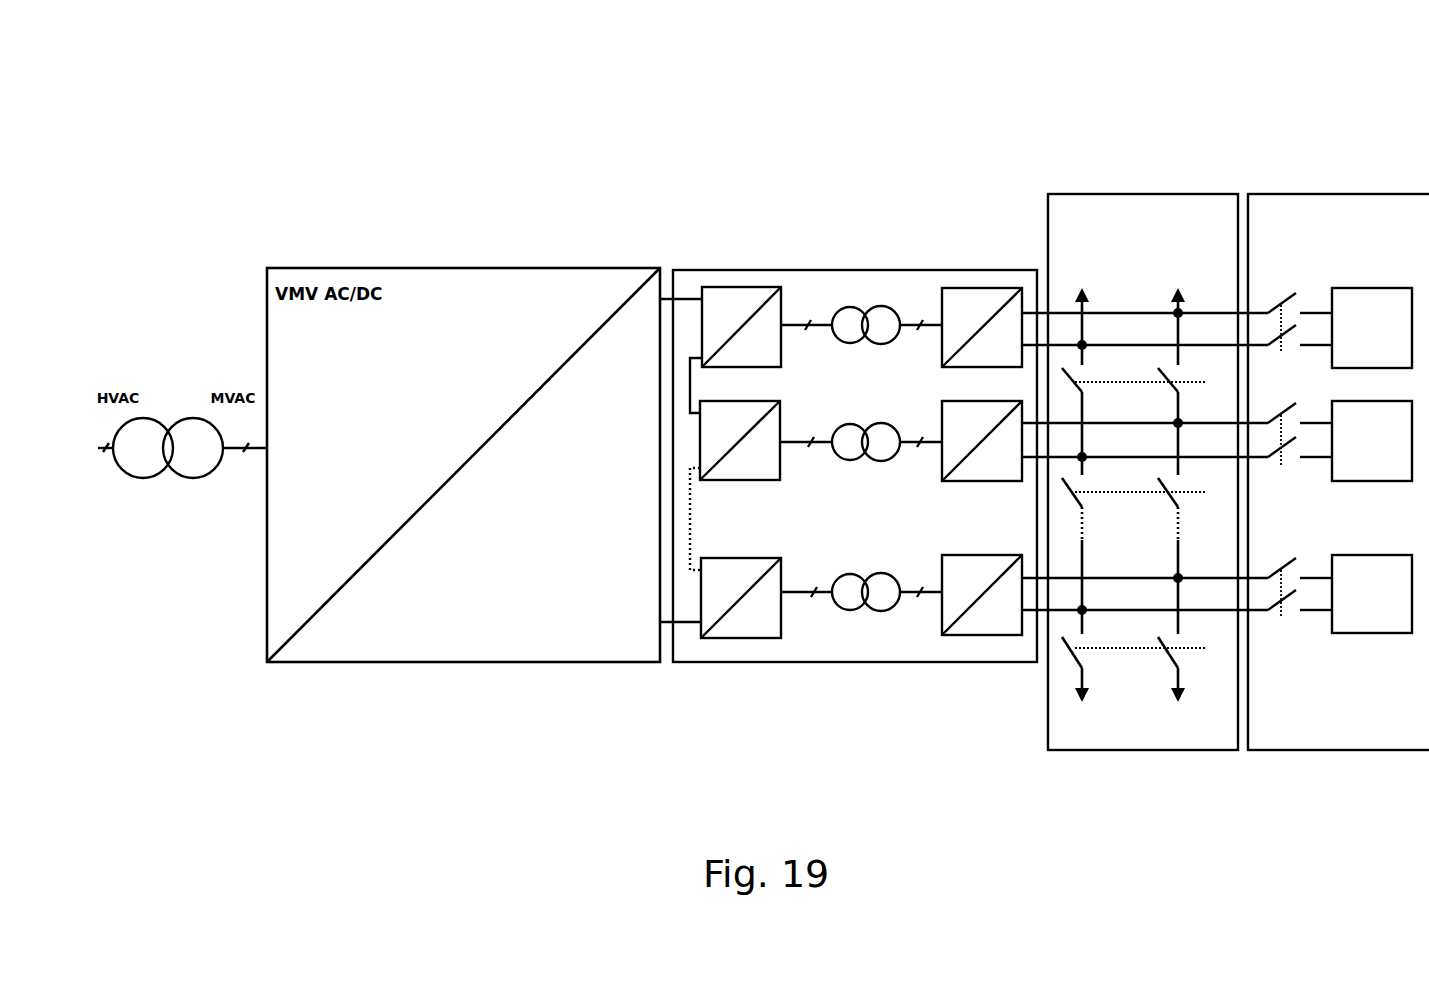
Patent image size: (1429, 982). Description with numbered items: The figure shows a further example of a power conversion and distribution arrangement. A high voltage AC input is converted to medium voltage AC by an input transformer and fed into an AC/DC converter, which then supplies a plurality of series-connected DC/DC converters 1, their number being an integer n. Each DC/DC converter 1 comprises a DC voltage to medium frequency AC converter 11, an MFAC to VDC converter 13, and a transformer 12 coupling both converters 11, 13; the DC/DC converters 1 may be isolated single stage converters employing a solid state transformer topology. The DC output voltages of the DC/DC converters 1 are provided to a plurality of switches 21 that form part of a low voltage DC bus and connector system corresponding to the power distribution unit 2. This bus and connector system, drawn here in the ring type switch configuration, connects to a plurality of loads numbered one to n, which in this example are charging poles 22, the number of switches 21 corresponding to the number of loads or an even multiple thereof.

The DC/DC converter 1 is at (905, 635).
The DC voltage to medium frequency AC converter 11 is at (740, 292).
The transformer 12 is at (868, 300).
The MFAC to VDC converter 13 is at (985, 292).
The power distribution unit 2 is at (1170, 202).
The switch 21 is at (1160, 672).
The charging pole 22 is at (1373, 620).